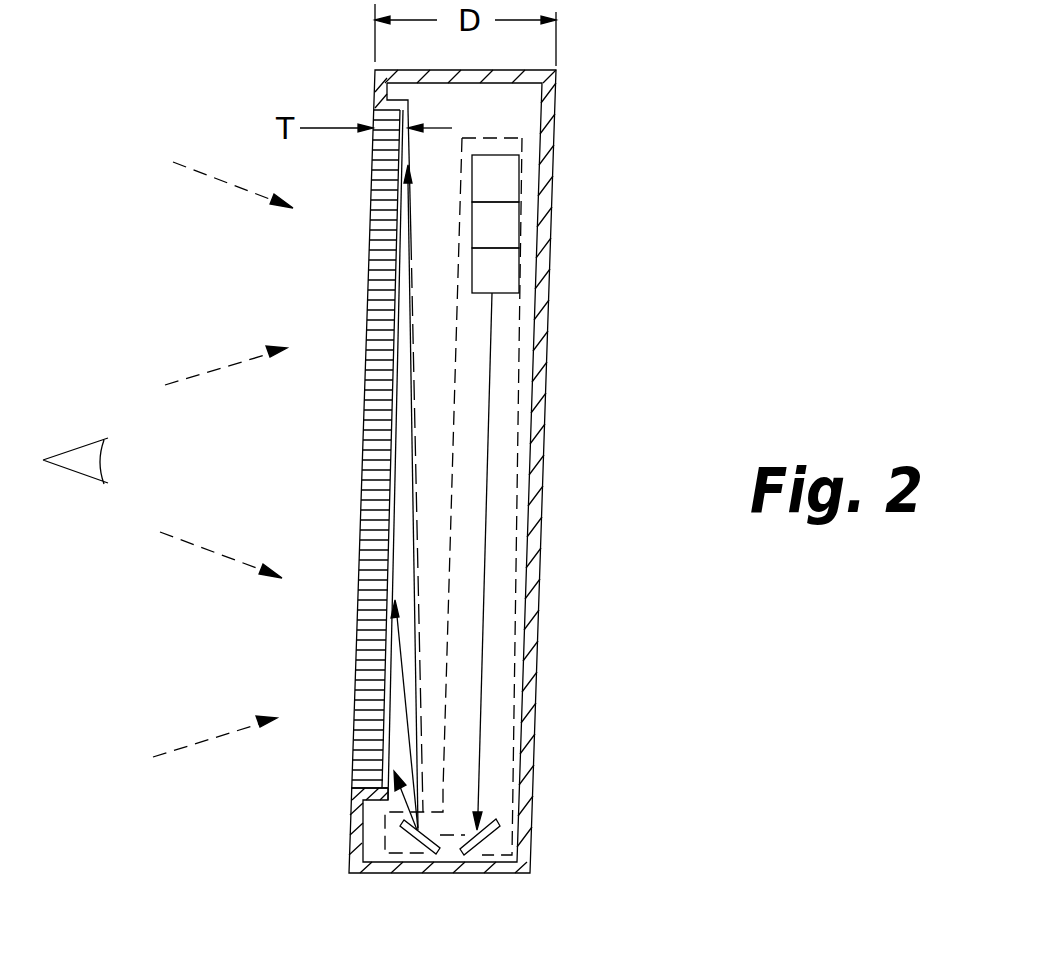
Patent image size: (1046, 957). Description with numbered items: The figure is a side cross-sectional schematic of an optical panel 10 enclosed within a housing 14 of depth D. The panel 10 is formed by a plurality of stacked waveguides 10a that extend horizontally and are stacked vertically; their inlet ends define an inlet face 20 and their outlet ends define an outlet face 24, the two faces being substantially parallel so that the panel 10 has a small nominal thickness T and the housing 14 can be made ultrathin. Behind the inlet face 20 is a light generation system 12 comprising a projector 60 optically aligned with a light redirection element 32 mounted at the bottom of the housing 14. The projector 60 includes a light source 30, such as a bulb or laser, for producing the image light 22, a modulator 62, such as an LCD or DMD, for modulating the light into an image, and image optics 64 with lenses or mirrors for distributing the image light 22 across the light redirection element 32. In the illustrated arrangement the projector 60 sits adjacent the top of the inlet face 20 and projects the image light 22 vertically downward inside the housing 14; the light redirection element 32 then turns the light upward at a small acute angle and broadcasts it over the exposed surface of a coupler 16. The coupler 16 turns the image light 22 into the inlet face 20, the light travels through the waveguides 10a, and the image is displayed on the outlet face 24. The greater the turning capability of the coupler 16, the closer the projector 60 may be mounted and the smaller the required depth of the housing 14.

The optical panel 10 is at (265, 302).
The waveguide 10a is at (370, 633).
The light generation system 12 is at (526, 445).
The housing 14 is at (542, 533).
The coupler 16 is at (398, 383).
The inlet face 20 is at (353, 755).
The image light 22 is at (483, 720).
The outlet face 24 is at (368, 410).
The light source 30 is at (519, 190).
The light redirection element 32 is at (397, 875).
The projector 60 is at (565, 190).
The modulator 62 is at (519, 235).
The image optics 64 is at (519, 278).